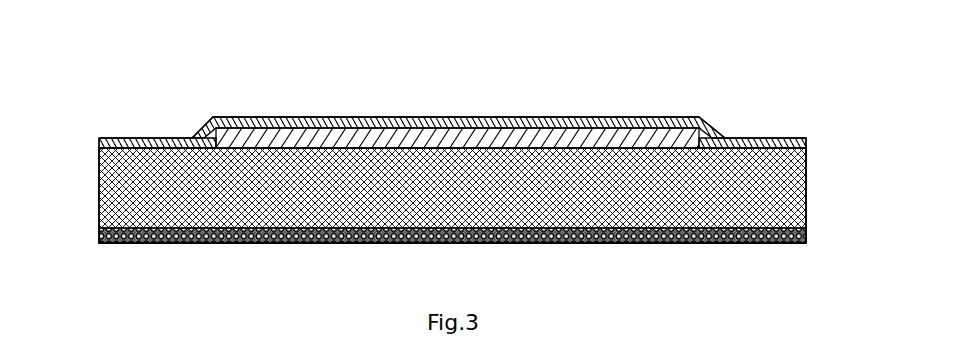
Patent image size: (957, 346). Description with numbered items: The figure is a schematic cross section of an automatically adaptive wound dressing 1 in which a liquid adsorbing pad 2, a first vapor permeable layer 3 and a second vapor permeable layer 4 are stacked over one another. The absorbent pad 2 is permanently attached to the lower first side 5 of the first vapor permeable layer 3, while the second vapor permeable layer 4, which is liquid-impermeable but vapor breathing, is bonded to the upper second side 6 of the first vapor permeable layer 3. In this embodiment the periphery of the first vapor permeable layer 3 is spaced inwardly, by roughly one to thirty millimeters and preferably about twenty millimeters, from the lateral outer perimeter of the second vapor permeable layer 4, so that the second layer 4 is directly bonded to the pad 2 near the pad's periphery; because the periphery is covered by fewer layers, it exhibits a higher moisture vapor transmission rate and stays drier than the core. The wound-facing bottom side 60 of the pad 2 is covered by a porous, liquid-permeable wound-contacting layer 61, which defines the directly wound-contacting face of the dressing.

The automatically adaptive wound dressing 1 is at (718, 95).
The liquid adsorbing pad 2 is at (793, 212).
The first vapor permeable layer 3 is at (623, 135).
The second vapor permeable layer 4 is at (807, 138).
The lower first side 5 is at (793, 153).
The upper second side 6 is at (509, 117).
The wound-facing bottom side 60 is at (99, 228).
The wound-contacting layer 61 is at (121, 243).